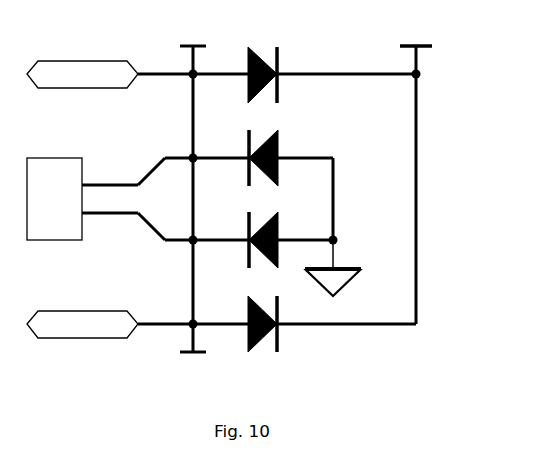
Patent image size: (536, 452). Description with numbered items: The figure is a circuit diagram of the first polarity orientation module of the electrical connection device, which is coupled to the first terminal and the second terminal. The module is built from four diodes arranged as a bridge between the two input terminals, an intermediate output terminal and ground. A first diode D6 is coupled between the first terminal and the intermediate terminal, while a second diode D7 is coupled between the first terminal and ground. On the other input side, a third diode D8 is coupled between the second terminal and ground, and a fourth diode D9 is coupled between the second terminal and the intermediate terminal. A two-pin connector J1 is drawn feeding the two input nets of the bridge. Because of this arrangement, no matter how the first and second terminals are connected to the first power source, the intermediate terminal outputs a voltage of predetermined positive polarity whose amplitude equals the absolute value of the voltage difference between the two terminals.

The first diode D6 is at (262, 65).
The second diode D7 is at (264, 149).
The third diode D8 is at (264, 231).
The fourth diode D9 is at (263, 315).
The connector J1 (port A) J1 is at (110, 202).